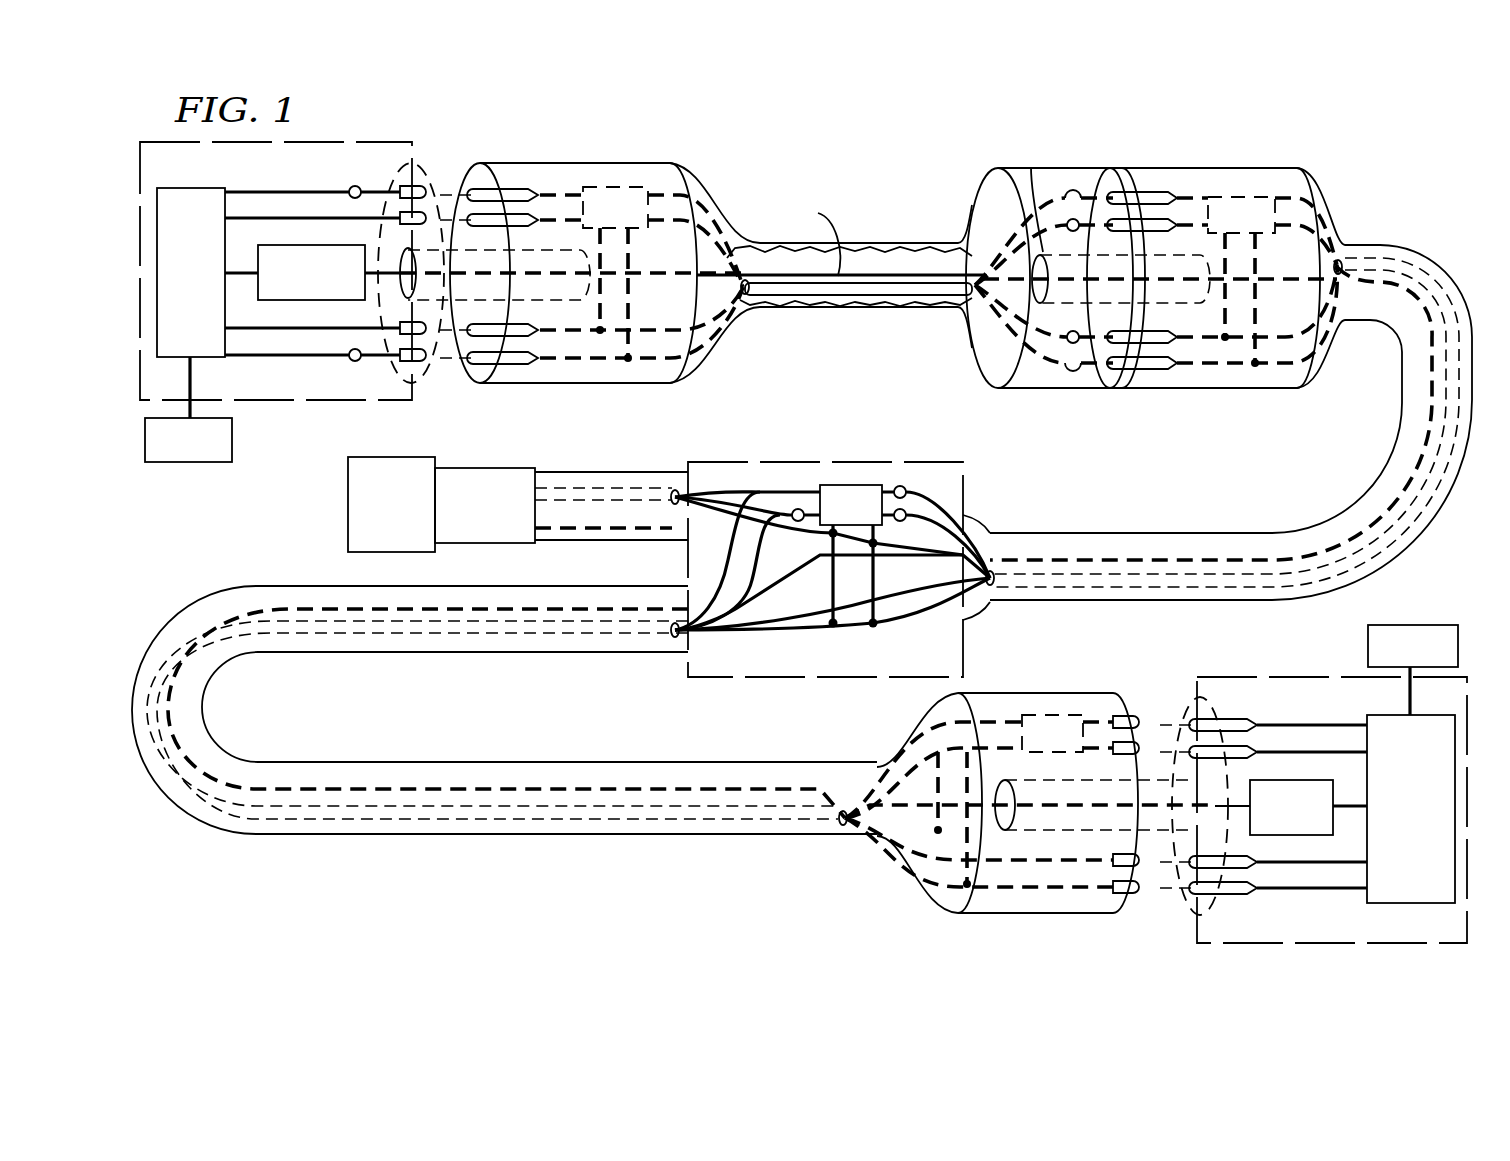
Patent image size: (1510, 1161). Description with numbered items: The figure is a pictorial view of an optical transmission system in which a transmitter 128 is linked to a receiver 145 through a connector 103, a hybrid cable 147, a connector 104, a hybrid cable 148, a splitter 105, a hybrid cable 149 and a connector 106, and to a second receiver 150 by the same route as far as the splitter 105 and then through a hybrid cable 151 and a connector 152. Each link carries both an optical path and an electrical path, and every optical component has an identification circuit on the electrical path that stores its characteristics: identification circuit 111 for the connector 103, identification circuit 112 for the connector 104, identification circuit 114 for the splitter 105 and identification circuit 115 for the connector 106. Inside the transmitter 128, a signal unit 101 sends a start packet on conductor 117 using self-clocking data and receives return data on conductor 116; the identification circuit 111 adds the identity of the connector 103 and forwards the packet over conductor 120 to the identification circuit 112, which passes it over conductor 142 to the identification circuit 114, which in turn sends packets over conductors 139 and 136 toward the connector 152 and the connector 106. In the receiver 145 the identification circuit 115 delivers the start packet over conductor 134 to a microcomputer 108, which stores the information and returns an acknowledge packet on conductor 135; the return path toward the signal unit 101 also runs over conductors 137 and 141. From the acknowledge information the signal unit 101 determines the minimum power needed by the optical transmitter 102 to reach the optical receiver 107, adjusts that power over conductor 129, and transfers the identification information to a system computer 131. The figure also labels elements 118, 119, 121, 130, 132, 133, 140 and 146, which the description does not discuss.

The signal unit 101 is at (204, 189).
The optical transmitter 102 is at (300, 245).
The connector 103 is at (533, 150).
The connector 104 is at (1170, 142).
The splitter 105 is at (983, 652).
The connector 106 is at (1070, 914).
The optical receiver 107 is at (1268, 835).
The microcomputer 108 is at (1380, 903).
The identification circuit 111 is at (606, 187).
The identification circuit 112 is at (1237, 197).
The identification circuit 114 is at (846, 486).
The identification circuit 115 is at (1063, 754).
The conductor 116 is at (292, 192).
The conductor 117 is at (322, 218).
The electrical line 118 is at (280, 360).
The electrical line 119 is at (340, 328).
The conductor 120 is at (1206, 198).
The optical fiber core 121 is at (1206, 229).
The transmitter 128 is at (314, 142).
The conductor 129 is at (240, 276).
The control line 130 is at (192, 388).
The system computer 131 is at (233, 442).
The control line 132 is at (1408, 690).
The system computer 133 is at (1435, 625).
The conductor 134 is at (1325, 725).
The conductor 135 is at (1296, 753).
The conductor 136 is at (800, 494).
The conductor 137 is at (807, 500).
The conductor 139 is at (730, 503).
The electrical line 140 is at (708, 494).
The conductor 141 is at (922, 494).
The conductor 142 is at (912, 518).
The receiver 145 is at (1272, 677).
The electrical link 146 is at (797, 296).
The hybrid cable 147 is at (900, 311).
The hybrid cable 148 is at (1363, 457).
The hybrid cable 149 is at (453, 763).
The receiver 150 is at (408, 457).
The hybrid cable 151 is at (636, 470).
The connector 152 is at (508, 468).